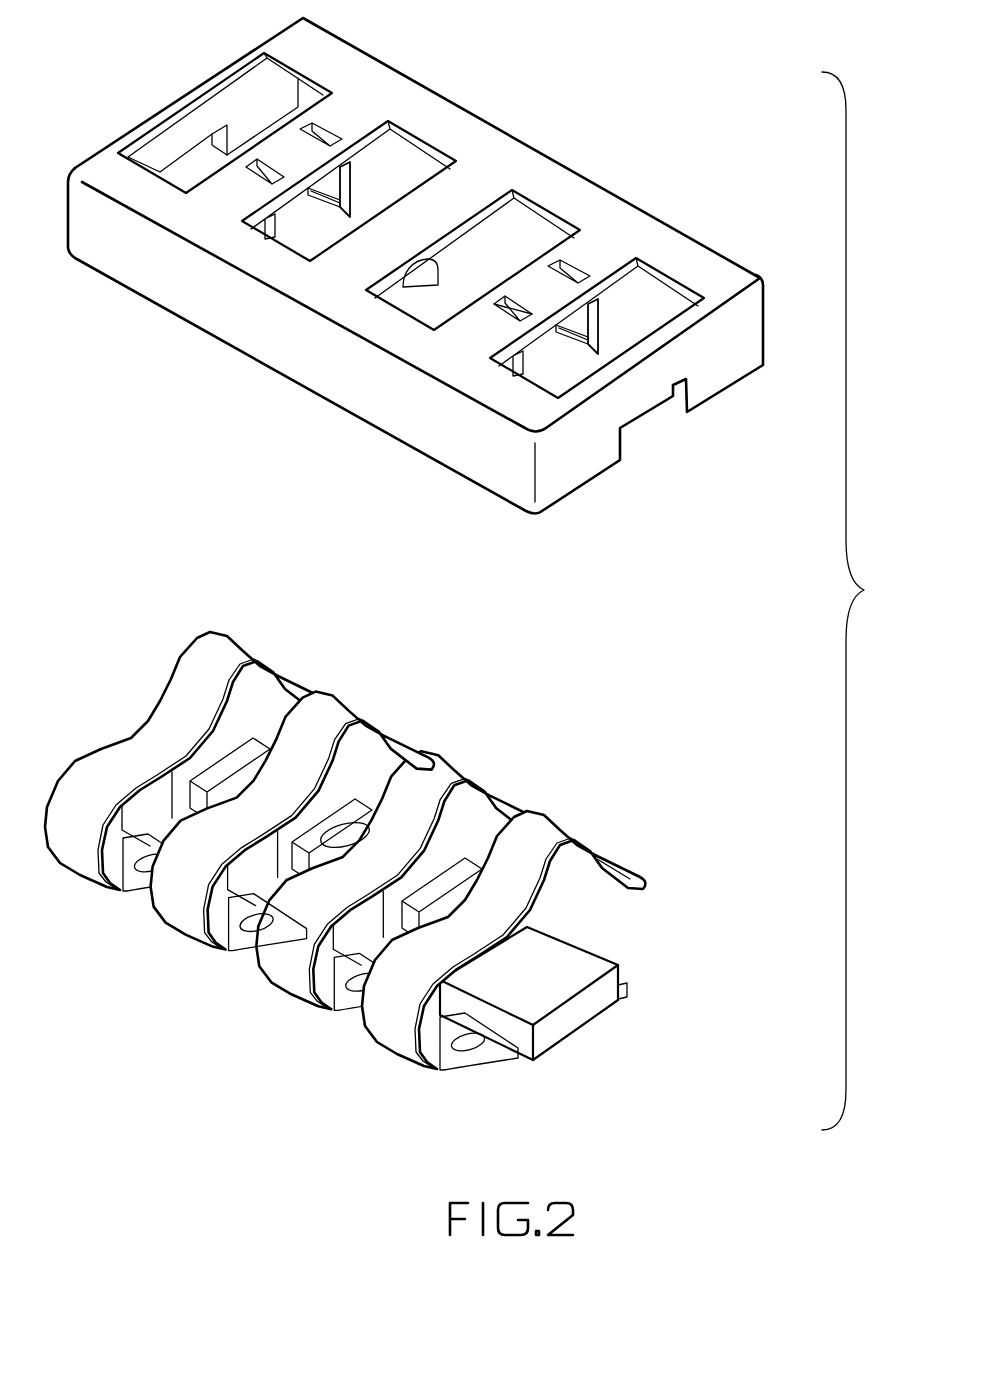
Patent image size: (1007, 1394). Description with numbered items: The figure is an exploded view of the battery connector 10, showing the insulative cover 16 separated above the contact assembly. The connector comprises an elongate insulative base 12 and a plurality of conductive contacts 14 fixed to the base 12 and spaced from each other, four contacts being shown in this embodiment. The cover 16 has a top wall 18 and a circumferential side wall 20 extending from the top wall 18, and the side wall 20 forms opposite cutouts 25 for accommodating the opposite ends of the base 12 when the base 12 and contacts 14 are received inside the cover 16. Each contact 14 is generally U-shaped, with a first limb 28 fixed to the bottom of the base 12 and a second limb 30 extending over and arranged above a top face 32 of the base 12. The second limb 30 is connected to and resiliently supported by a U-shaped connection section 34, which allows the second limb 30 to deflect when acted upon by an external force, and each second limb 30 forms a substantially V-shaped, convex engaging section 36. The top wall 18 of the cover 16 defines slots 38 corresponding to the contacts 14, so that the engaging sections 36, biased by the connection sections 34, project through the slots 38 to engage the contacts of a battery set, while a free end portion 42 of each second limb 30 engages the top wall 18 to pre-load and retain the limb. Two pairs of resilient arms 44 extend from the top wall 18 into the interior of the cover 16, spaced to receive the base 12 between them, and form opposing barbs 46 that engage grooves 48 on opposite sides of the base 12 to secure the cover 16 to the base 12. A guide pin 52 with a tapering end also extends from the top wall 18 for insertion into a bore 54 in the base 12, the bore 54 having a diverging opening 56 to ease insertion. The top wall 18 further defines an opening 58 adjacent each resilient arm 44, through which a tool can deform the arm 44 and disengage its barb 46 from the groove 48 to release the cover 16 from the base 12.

The battery connector 10 is at (870, 601).
The insulative base 12 is at (563, 1022).
The conductive contacts 14 is at (410, 1067).
The insulative cover 16 is at (600, 168).
The top wall 18 is at (603, 242).
The side wall 20 is at (573, 463).
The cutouts 25 is at (213, 143).
The first limb 28 is at (493, 1066).
The second limb 30 is at (480, 932).
The top face 32 is at (587, 963).
The U-shaped connection section 34 is at (393, 1005).
The engaging section 36 is at (533, 828).
The slots 38 is at (287, 250).
The free end portion 42 is at (627, 880).
The resilient arms 44 is at (350, 177).
The barbs 46 is at (350, 184).
The grooves 48 is at (440, 1072).
The guide pin 52 is at (423, 272).
The bore 54 is at (351, 838).
The diverging opening 56 is at (210, 917).
The opening 58 is at (492, 298).